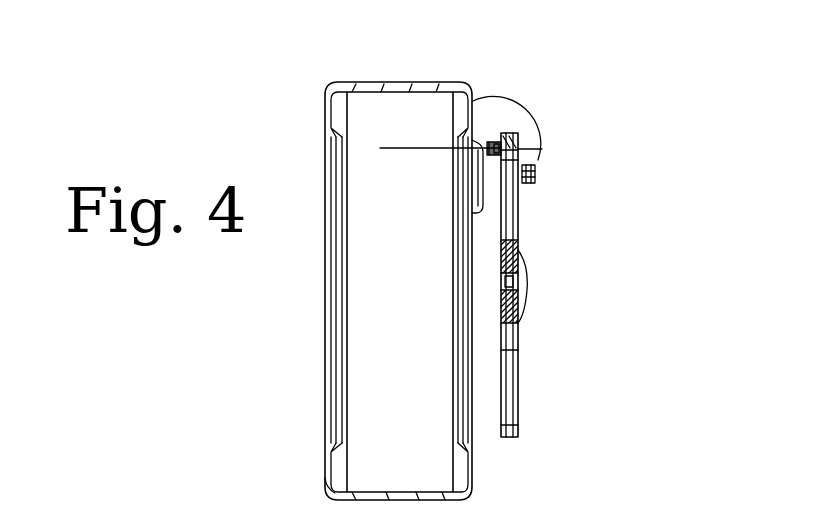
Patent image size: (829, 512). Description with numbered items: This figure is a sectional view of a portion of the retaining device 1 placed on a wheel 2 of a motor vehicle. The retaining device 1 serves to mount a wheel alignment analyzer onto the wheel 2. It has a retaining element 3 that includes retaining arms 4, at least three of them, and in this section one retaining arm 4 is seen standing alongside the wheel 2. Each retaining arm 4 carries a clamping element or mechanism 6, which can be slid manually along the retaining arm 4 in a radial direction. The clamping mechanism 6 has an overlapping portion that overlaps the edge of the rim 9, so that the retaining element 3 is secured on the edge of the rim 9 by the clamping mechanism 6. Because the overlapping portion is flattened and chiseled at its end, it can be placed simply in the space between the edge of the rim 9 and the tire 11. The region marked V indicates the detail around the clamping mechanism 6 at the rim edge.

The retaining device 1 is at (580, 227).
The wheel 2 is at (472, 80).
The retaining element 3 is at (522, 267).
The retaining arm 4 is at (519, 197).
The clamping element or mechanism 6 is at (492, 136).
The rim 9 is at (330, 317).
The tire 11 is at (325, 478).
The detail view V is at (527, 108).